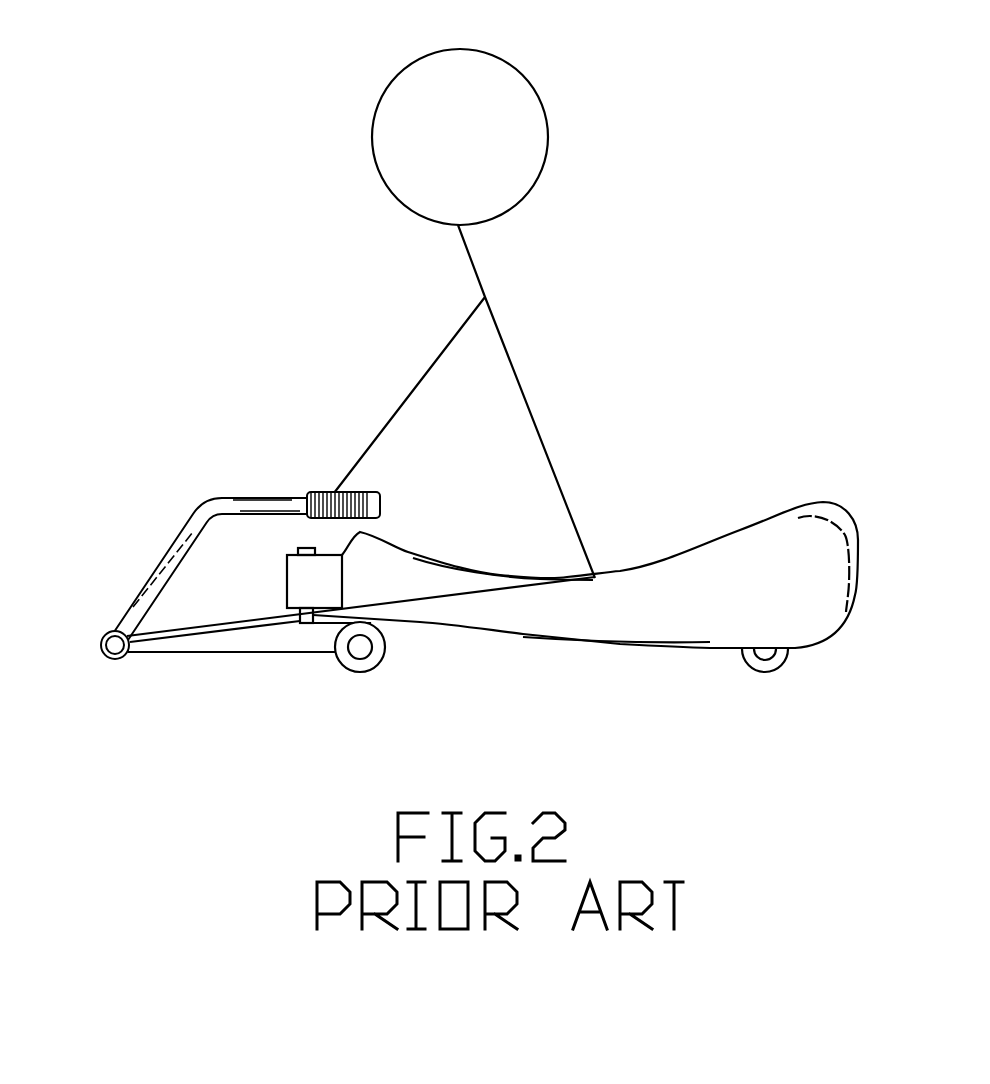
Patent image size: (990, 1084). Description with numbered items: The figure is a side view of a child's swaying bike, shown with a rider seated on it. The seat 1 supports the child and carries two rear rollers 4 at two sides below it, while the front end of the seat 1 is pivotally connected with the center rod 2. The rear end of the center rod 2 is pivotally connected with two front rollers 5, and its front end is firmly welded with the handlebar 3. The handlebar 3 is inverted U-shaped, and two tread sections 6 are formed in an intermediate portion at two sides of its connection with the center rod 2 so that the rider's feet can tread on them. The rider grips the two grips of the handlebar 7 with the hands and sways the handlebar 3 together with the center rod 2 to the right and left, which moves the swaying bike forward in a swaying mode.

The seat 1 is at (858, 573).
The center rod 2 is at (231, 653).
The handlebar 3 is at (203, 500).
The rear rollers 4 is at (768, 669).
The front rollers 5 is at (378, 662).
The tread sections 6 is at (103, 638).
The grips of the handlebar 7 is at (317, 490).